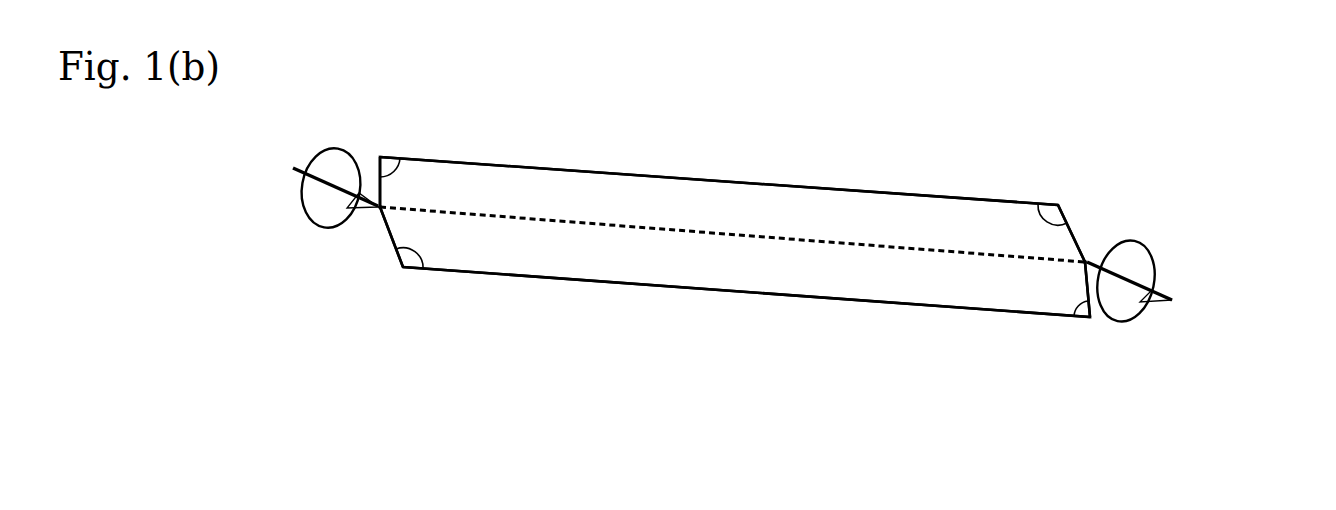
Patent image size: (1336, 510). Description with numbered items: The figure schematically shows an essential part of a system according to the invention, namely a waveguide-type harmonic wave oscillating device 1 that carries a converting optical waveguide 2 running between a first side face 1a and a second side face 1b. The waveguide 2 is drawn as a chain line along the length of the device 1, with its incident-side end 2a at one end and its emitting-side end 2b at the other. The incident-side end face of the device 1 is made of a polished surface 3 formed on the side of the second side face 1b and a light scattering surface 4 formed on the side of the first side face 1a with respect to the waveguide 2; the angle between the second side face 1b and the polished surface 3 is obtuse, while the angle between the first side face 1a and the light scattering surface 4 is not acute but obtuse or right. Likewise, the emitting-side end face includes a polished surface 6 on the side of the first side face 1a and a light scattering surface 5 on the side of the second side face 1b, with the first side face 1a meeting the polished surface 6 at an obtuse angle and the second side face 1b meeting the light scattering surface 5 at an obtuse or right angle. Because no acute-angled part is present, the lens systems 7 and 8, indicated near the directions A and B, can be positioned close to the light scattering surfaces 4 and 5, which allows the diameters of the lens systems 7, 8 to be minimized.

The waveguide-type harmonic wave oscillating device 1 is at (851, 183).
The first side face 1a is at (965, 197).
The second side face 1b is at (935, 307).
The converting optical waveguide 2 is at (747, 237).
The first end of central axis 2a is at (377, 212).
The second end of central axis 2b is at (1090, 262).
The polished surface 3 is at (390, 247).
The light scattering surface 4 is at (372, 193).
The light scattering surface 5 is at (1098, 318).
The polished surface 6 is at (1073, 230).
The lens system 7 is at (327, 153).
The lens system 8 is at (1140, 258).
The direction vector at first end A is at (305, 175).
The direction vector at second end B is at (1140, 277).